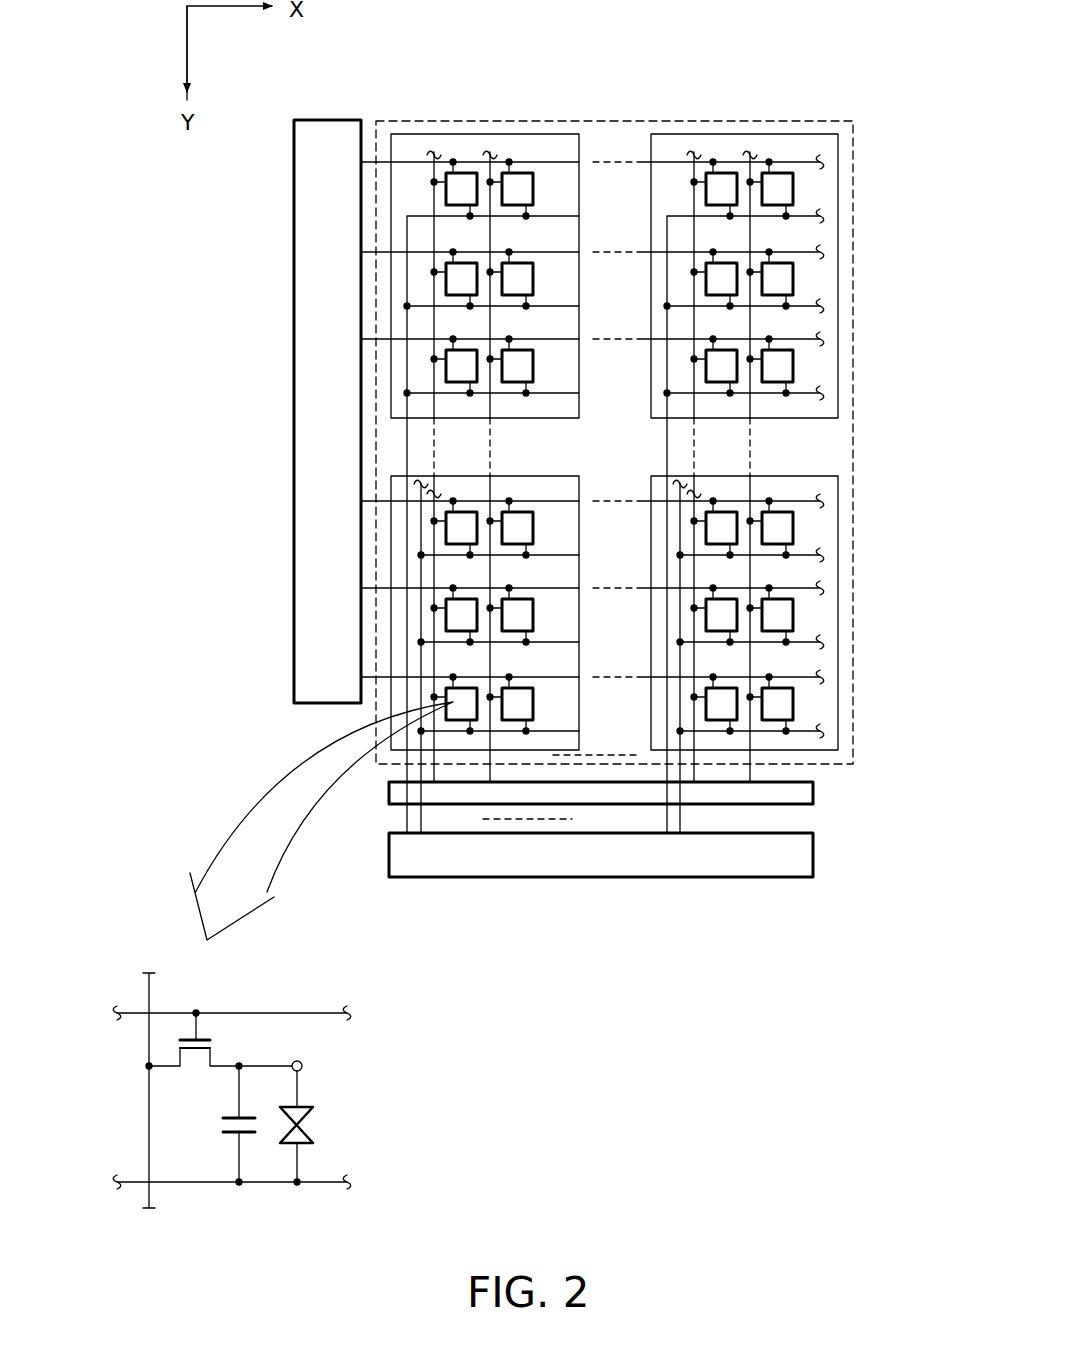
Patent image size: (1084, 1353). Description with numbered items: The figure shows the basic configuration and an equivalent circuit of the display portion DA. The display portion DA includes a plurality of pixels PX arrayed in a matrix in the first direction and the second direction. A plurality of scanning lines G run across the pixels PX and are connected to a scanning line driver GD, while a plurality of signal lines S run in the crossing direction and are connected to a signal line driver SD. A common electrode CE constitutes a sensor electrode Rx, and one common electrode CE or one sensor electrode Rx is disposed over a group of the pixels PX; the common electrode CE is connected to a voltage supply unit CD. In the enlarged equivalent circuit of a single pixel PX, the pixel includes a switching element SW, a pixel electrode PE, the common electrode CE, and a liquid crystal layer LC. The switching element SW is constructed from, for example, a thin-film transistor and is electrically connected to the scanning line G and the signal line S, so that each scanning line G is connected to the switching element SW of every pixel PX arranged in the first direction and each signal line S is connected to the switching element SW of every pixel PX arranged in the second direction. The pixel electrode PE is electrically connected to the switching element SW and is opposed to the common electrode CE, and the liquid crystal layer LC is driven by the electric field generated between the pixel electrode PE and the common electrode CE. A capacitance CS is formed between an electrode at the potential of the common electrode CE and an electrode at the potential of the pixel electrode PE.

The scanning line driver GD is at (330, 120).
The signal line S is at (434, 151).
The scanning line G is at (822, 160).
The display portion DA is at (680, 121).
The sensor electrode Rx is at (554, 134).
The pixel PX is at (534, 182).
The common electrode CE is at (709, 217).
The signal line driver SD is at (814, 792).
The voltage supply unit CD is at (814, 853).
The switching element SW is at (222, 1052).
The pixel electrode PE is at (303, 1066).
The capacitance CS is at (216, 1123).
The liquid crystal layer LC is at (320, 1124).